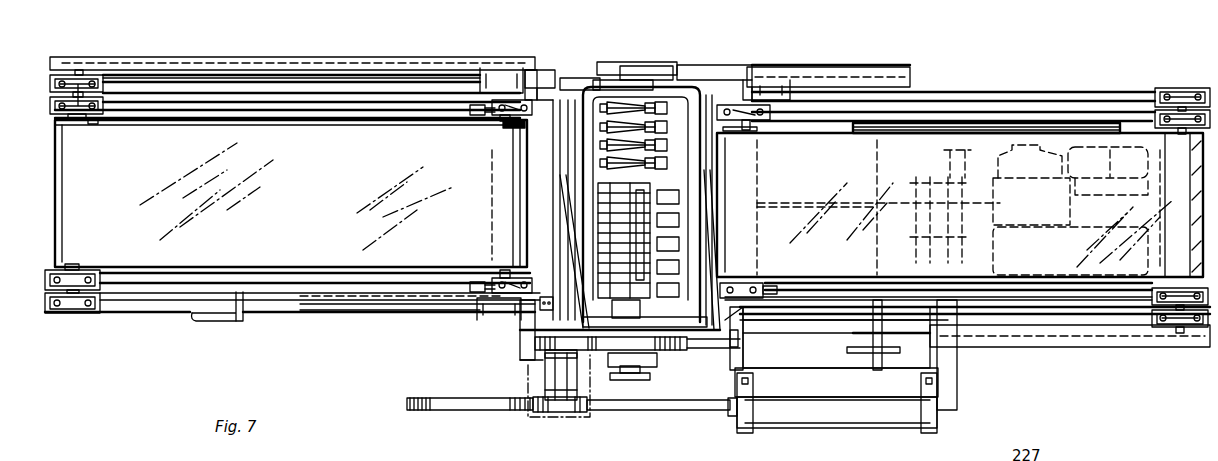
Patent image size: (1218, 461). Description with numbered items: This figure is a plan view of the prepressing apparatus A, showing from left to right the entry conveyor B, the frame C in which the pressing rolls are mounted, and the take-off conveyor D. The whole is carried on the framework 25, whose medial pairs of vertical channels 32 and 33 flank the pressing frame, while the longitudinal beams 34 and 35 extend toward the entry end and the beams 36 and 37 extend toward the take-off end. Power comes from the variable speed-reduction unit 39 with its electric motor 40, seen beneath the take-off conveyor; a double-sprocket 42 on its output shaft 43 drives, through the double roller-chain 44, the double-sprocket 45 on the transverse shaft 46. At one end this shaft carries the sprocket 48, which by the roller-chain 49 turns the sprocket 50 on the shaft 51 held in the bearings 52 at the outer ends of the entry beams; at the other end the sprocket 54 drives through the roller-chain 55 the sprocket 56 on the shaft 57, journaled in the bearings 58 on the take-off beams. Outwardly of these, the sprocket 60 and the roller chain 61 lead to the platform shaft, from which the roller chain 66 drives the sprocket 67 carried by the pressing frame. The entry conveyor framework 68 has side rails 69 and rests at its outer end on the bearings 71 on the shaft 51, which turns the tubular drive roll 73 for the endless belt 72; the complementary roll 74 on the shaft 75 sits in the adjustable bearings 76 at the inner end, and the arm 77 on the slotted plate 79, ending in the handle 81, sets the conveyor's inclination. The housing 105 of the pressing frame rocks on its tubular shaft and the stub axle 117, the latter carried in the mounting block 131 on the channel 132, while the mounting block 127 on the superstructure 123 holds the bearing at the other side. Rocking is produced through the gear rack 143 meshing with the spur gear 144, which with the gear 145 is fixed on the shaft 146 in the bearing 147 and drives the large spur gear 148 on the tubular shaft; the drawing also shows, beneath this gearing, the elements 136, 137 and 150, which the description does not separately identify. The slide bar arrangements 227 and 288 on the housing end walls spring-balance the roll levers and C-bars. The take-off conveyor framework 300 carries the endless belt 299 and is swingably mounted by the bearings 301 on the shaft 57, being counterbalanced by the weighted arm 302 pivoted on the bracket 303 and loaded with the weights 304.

The prepressing apparatus A is at (263, 56).
The entry conveyor B is at (298, 140).
The frame C is at (598, 88).
The take-off conveyor D is at (938, 125).
The framework 25 is at (120, 312).
The vertically disposed channels 32 is at (500, 87).
The vertically disposed channels 33 is at (758, 95).
The beam 34 is at (319, 86).
The beam 35 is at (143, 302).
The beam 36 is at (1110, 102).
The beam 37 is at (1010, 315).
The variable speed-reduction unit 39 is at (966, 204).
The electric motor 40 is at (1024, 182).
The double-sprocket 42 is at (1108, 170).
The output shaft 43 is at (1122, 161).
The double roller-chain 44 is at (1058, 130).
The double-sprocket 45 is at (883, 124).
The shaft 46 is at (888, 280).
The sprocket 48 is at (883, 73).
The roller-chain 49 is at (164, 64).
The sprocket 50 is at (85, 58).
The shaft 51 is at (86, 70).
The bearings 52 is at (72, 73).
The sprocket 54 is at (855, 333).
The roller-chain 55 is at (1048, 338).
The sprocket 56 is at (1190, 334).
The shaft 57 is at (1178, 96).
The bearings 58 is at (1188, 97).
The sprocket 60 is at (870, 349).
The roller chain 61 is at (778, 348).
The roller chain 66 is at (630, 382).
The sprocket 67 is at (640, 378).
The framework 68 is at (349, 104).
The side rails 69 is at (337, 121).
The bearings 71 is at (80, 122).
The endless belt 72 is at (372, 142).
The tubular drive roll 73 is at (93, 122).
The complementary roll 74 is at (505, 123).
The shaft 75 is at (507, 283).
The bearings 76 is at (503, 122).
The arm 77 is at (398, 295).
The plate 79 is at (352, 299).
The handle 81 is at (207, 322).
The housing 105 is at (615, 97).
The stub axle 117 is at (637, 78).
The superstructure 123 is at (738, 340).
The mounting block 127 is at (655, 364).
The mounting block 131 is at (657, 68).
The channel 132 is at (707, 73).
The cylinder 136 is at (815, 412).
The cylinder frame 137 is at (833, 369).
The gear rack 143 is at (443, 402).
The spur gear 144 is at (557, 412).
The gear 145 is at (536, 345).
The shaft 146 is at (543, 371).
The bearing 147 is at (547, 382).
The spur gear 148 is at (665, 348).
The rod 150 is at (646, 409).
The slide bar arrangement 227 is at (545, 296).
The slide-bar arrangement 288 is at (546, 80).
The endless belt 299 is at (958, 150).
The framework 300 is at (995, 118).
The bearings 301 is at (1178, 128).
The weighted arm 302 is at (772, 200).
The bracket 303 is at (833, 223).
The weights 304 is at (968, 212).